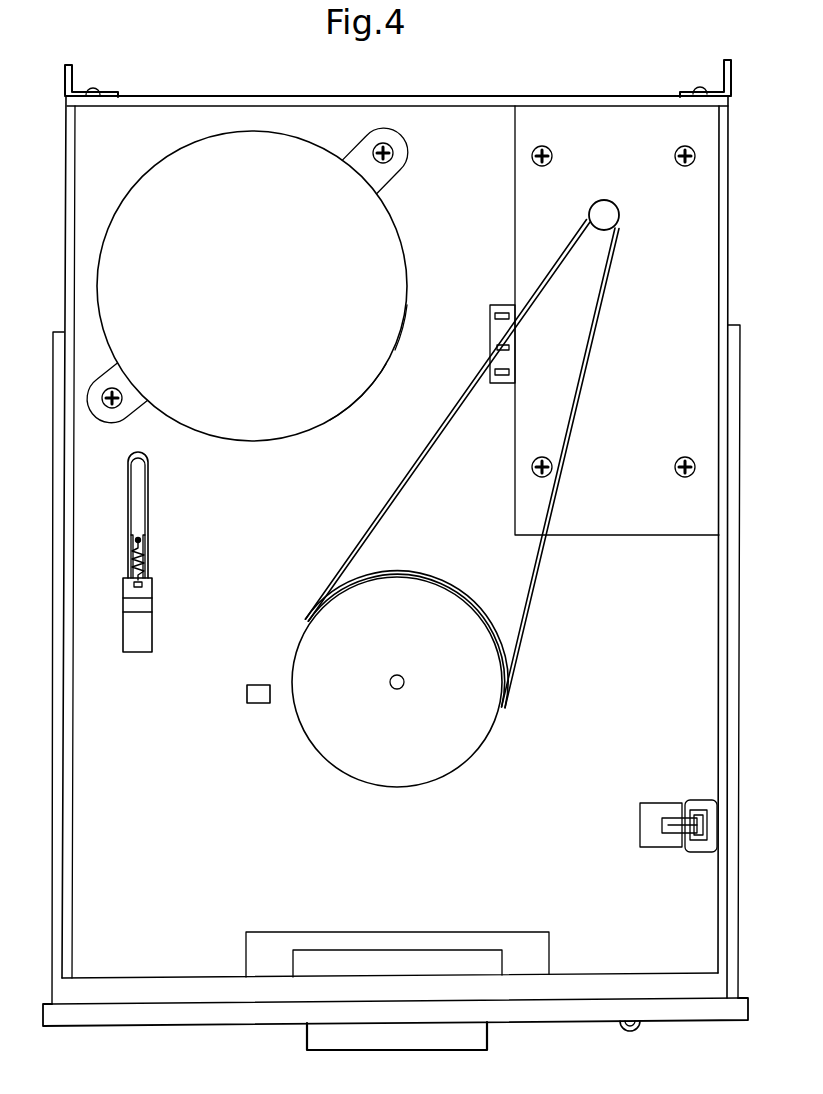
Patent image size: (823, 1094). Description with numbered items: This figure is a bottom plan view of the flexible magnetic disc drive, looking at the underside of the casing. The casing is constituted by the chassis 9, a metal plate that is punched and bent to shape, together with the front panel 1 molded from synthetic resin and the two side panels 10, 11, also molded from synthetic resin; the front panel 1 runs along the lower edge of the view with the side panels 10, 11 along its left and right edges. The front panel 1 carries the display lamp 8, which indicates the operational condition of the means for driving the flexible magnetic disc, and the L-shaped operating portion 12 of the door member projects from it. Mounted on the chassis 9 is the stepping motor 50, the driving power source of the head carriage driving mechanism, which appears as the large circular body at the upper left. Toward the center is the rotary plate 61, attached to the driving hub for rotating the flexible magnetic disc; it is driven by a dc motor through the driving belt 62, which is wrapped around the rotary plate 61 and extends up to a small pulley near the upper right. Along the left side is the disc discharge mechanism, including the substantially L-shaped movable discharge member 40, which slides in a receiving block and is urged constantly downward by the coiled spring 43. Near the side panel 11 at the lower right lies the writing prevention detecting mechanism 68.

The front panel 1 is at (197, 1017).
The display lamp 8 is at (638, 1030).
The chassis 9 is at (662, 940).
The side panel 10 is at (57, 789).
The side panel 11 is at (733, 647).
The operating portion 12 is at (469, 1041).
The movable discharge member 40 is at (140, 510).
The coiled spring 43 is at (143, 562).
The stepping motor 50 is at (135, 207).
The rotary plate 61 is at (450, 750).
The driving belt 62 is at (530, 598).
The writing prevention detecting mechanism 68 is at (697, 837).